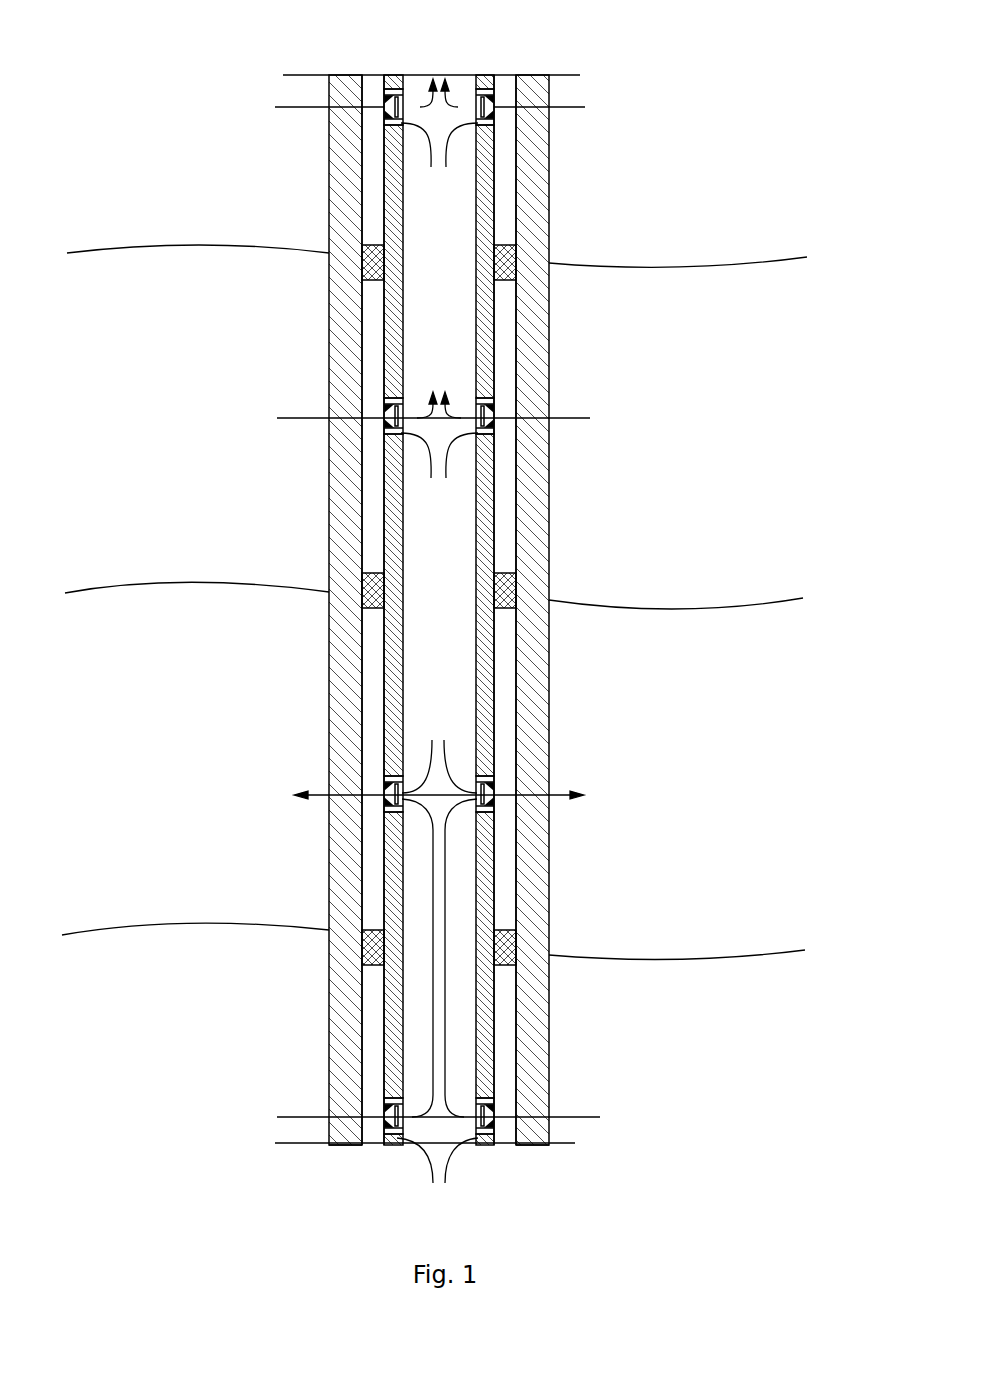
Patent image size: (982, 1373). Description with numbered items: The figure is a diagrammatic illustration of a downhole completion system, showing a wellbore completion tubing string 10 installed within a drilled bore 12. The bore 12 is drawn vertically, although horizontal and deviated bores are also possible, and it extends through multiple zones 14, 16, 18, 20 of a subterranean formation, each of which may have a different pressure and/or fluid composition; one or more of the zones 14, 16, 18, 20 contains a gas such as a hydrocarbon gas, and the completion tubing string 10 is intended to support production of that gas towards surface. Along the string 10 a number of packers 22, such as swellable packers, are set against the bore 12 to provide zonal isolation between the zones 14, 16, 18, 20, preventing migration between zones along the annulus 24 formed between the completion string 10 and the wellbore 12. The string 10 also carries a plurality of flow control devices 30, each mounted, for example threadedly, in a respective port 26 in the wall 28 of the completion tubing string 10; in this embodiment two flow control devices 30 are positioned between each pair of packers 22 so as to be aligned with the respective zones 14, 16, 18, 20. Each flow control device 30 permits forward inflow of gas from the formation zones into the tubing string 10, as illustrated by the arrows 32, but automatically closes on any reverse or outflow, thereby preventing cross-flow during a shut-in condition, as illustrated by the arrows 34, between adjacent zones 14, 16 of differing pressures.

The wellbore completion tubing string 10 is at (487, 202).
The drilled bore 12 is at (512, 322).
The zone 14 is at (541, 1083).
The zone 16 is at (433, 857).
The zone 18 is at (434, 507).
The zone 20 is at (437, 215).
The packer 22 is at (372, 262).
The annulus 24 is at (503, 518).
The port 26 is at (485, 84).
The wall 28 is at (392, 197).
The flow control device 30 is at (437, 669).
The arrows 32 is at (300, 107).
The arrows 34 is at (317, 792).